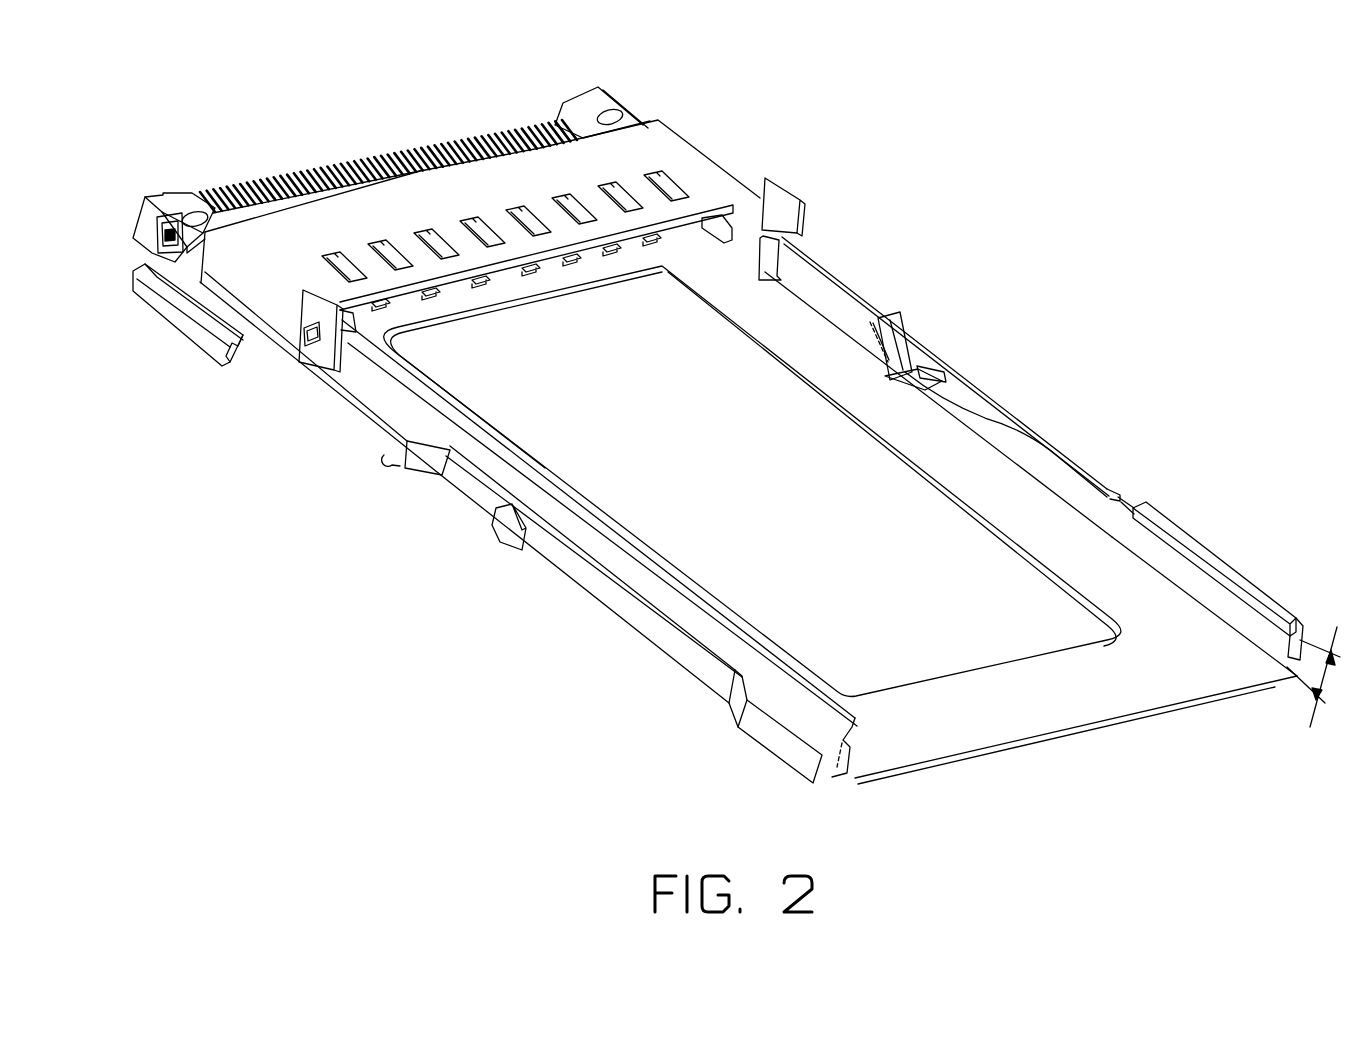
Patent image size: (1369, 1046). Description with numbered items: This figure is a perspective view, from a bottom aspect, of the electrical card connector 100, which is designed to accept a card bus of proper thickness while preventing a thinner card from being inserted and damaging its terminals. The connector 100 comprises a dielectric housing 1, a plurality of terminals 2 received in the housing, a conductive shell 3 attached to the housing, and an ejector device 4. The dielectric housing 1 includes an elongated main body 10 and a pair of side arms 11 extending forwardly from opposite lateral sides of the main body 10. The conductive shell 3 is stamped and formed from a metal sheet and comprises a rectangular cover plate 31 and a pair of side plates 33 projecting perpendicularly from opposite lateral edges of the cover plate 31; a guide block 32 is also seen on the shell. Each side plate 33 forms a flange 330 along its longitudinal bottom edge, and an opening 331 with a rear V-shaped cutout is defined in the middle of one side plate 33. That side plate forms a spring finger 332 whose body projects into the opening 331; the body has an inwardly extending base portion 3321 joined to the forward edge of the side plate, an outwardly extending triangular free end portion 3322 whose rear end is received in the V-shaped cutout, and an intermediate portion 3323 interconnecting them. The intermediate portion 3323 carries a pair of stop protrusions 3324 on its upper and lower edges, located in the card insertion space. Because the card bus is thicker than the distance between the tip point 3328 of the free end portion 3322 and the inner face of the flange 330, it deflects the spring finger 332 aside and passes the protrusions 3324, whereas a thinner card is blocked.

The electrical card connector 100 is at (995, 158).
The dielectric housing 1 is at (188, 198).
The terminals 2 is at (403, 160).
The conductive shell 3 is at (365, 382).
The ejector device 4 is at (617, 597).
The main body 10 is at (630, 155).
The side arms 11 is at (590, 103).
The cover plate 31 is at (997, 692).
The guide block 32 is at (190, 322).
The side plates 33 is at (833, 270).
The flange 330 is at (1207, 558).
The opening 331 is at (912, 373).
The spring finger 332 is at (1016, 390).
The base portion 3321 is at (873, 323).
The triangular free end portion 3322 is at (913, 365).
The intermediate portion 3323 is at (895, 338).
The stop protrusions 3324 is at (903, 358).
The tip point 3328 is at (1013, 421).